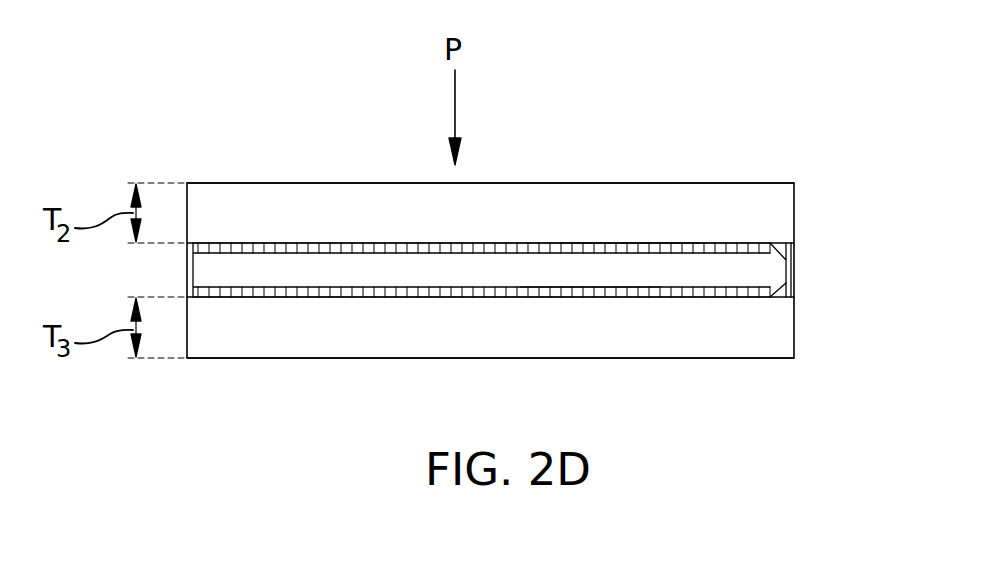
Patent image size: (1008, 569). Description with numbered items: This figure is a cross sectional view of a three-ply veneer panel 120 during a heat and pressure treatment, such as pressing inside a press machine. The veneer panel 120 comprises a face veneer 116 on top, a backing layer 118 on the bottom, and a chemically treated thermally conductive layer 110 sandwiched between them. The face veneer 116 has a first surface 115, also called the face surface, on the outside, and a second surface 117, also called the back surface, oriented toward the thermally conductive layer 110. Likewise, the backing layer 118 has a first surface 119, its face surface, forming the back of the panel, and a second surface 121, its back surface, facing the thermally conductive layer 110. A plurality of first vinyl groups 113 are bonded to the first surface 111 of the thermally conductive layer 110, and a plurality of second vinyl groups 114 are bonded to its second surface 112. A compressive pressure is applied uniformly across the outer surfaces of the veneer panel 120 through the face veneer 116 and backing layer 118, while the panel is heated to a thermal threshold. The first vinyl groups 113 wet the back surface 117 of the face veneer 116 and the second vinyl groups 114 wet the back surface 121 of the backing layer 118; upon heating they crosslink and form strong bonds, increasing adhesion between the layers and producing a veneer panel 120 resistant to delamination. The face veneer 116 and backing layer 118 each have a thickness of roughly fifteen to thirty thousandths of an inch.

The veneer panel 120 is at (157, 120).
The face veneer 116 is at (490, 221).
The backing layer 118 is at (490, 315).
The thermally conductive layer 110 is at (481, 270).
The first vinyl groups 113 is at (318, 250).
The second surface of thermally conductive layer 112 is at (288, 290).
The first surface of face veneer 115 is at (377, 183).
The first surface of thermally conductive layer 111 is at (632, 250).
The second vinyl groups 114 is at (588, 291).
The first surface of backing layer 119 is at (248, 359).
The second surface of face veneer 117 is at (786, 261).
The second surface of backing layer 121 is at (786, 277).